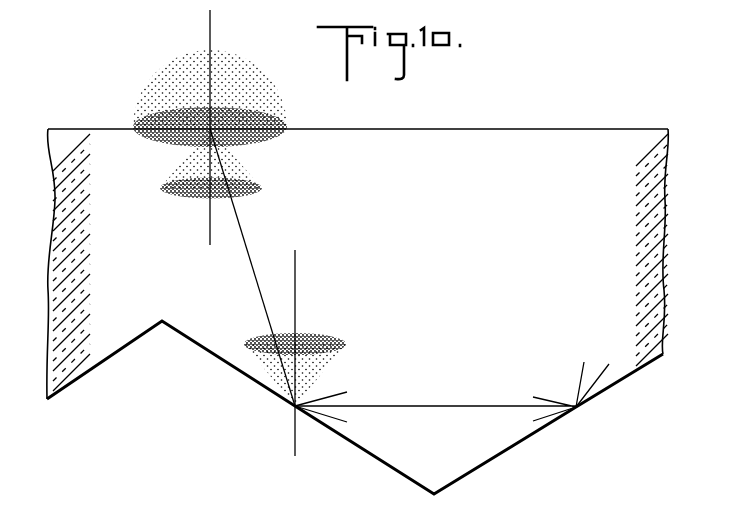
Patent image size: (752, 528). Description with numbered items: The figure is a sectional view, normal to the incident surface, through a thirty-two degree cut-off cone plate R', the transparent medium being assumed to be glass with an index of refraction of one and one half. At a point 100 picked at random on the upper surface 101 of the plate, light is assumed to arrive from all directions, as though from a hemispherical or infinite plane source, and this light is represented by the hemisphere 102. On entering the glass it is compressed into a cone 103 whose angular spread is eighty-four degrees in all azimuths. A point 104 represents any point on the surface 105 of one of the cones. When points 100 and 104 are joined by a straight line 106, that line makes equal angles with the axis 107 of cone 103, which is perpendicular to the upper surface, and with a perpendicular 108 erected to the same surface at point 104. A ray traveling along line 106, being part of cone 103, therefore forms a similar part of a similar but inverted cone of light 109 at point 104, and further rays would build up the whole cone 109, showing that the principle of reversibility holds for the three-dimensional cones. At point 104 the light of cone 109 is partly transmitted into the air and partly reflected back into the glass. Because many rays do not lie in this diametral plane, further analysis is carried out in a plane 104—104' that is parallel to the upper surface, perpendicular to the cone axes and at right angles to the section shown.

The point 100 is at (210, 128).
The upper surface 101 is at (501, 129).
The hemisphere 102 is at (245, 60).
The cone 103 is at (250, 173).
The point 104 is at (296, 416).
The point defining plane 104— 104' is at (461, 396).
The surface of cone 105 is at (233, 369).
The straight line 106 is at (250, 268).
The axis 107 is at (207, 213).
The perpendicular 108 is at (295, 306).
The inverted cone of light 109 is at (347, 336).
The cut-off cone plate R' is at (358, 250).